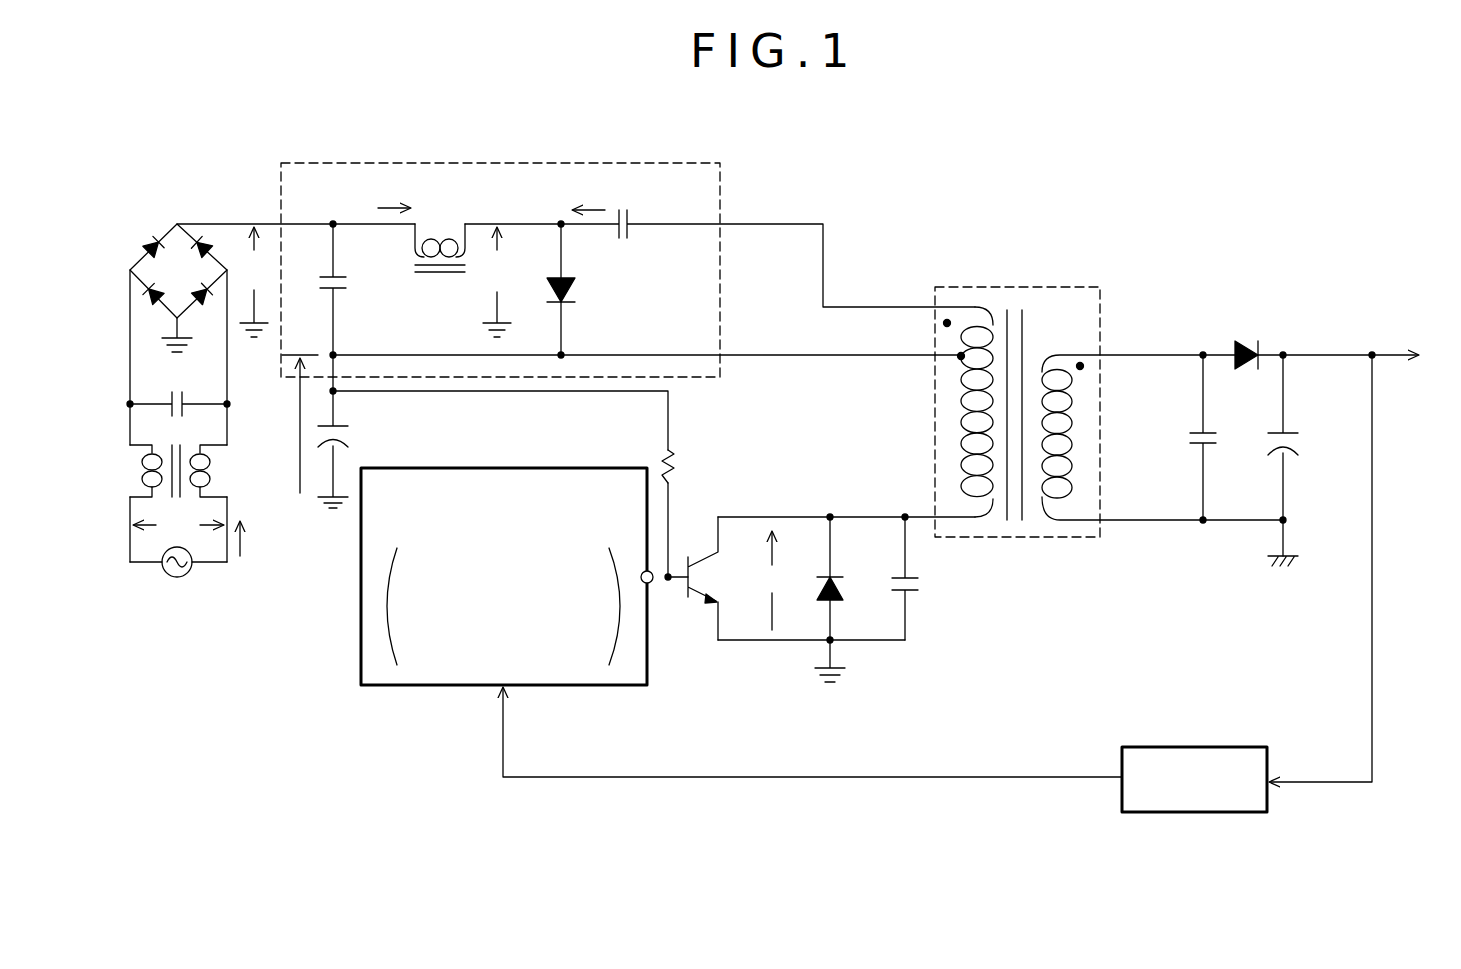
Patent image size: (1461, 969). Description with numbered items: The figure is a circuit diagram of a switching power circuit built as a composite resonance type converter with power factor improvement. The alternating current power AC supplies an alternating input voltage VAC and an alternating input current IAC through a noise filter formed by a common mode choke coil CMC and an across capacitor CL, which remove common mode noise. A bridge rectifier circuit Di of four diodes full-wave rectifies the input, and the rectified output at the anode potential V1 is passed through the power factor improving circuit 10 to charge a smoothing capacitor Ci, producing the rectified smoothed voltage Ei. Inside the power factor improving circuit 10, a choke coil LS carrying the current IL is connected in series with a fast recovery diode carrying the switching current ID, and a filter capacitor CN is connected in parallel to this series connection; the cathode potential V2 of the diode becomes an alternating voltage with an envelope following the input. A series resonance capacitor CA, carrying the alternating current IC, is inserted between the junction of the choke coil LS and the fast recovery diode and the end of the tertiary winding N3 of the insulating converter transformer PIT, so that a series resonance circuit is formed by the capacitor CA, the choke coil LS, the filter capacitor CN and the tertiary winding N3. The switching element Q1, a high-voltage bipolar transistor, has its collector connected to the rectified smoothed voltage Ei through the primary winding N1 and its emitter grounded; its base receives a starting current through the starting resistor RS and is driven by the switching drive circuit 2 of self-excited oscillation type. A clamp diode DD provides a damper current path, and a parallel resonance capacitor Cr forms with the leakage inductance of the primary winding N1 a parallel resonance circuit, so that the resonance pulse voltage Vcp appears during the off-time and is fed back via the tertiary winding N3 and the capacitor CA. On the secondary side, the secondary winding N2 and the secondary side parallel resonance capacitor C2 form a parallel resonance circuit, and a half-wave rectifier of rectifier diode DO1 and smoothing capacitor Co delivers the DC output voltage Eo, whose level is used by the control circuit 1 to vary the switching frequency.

The control circuit 1 is at (1191, 747).
The switching drive circuit 2 is at (558, 688).
The power factor improving circuit 10 is at (522, 162).
The bridge rectifier circuit Di is at (178, 288).
The anode potential of the fast recovery diode V1 is at (253, 282).
The across capacitor CL is at (178, 392).
The common mode choke coil CMC is at (197, 471).
The alternating input voltage VAC is at (178, 526).
The alternating input current IAC is at (265, 539).
The alternating current power AC is at (178, 576).
The rectified smoothed voltage Ei is at (300, 424).
The smoothing capacitor Ci is at (342, 417).
The filter capacitor CN is at (352, 289).
The current flowing in the choke coil IL is at (394, 191).
The choke coil LS is at (440, 262).
The cathode potential of the fast recovery diode V2 is at (496, 282).
The alternating current flowing into the series resonance capacitor IC is at (589, 192).
The switching current flowing in the fast recovery diode ID is at (581, 237).
The series resonance capacitor CA is at (768, 252).
The starting resistor RS is at (685, 466).
The switching element Q1 is at (711, 578).
The resonance pulse voltage Vcp is at (772, 581).
The clamp diode DD is at (849, 598).
The parallel resonance capacitor Cr is at (920, 577).
The insulating converter transformer PIT is at (1017, 396).
The primary winding N1 is at (950, 423).
The secondary winding N2 is at (1080, 422).
The tertiary winding N3 is at (948, 340).
The rectifier diode DO1 is at (1243, 340).
The secondary side parallel resonance capacitor C2 is at (1222, 437).
The smoothing capacitor Co is at (1293, 423).
The DC output voltage Eo is at (1370, 356).